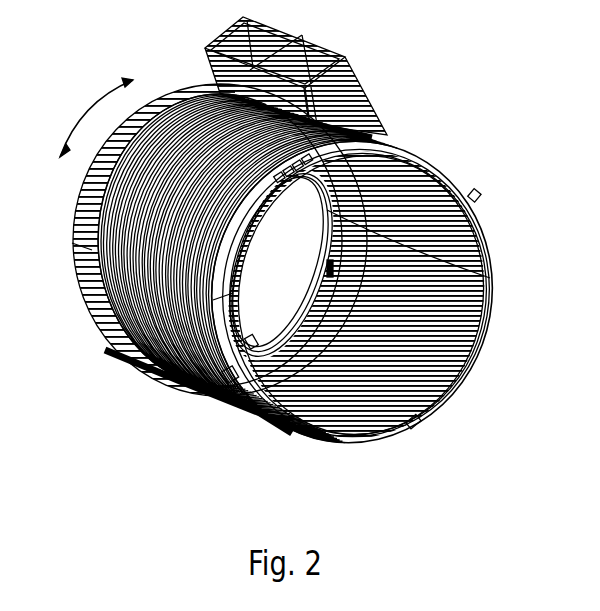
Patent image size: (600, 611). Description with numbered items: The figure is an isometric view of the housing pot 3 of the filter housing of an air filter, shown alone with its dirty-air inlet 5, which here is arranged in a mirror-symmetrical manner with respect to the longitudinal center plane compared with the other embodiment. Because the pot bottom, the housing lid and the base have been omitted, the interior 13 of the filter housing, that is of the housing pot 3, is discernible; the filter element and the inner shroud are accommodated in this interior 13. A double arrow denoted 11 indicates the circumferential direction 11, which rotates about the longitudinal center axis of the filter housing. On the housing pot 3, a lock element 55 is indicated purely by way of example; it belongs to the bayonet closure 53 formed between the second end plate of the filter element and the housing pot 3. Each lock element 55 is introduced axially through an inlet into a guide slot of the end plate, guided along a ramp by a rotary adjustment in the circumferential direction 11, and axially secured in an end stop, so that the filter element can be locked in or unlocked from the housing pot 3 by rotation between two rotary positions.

The housing pot 3 is at (460, 180).
The dirty-air inlet 5 is at (348, 82).
The circumferential direction 11 is at (95, 107).
The interior 13 is at (385, 315).
The bayonet closure 53 is at (357, 260).
The lock element 55 is at (326, 262).